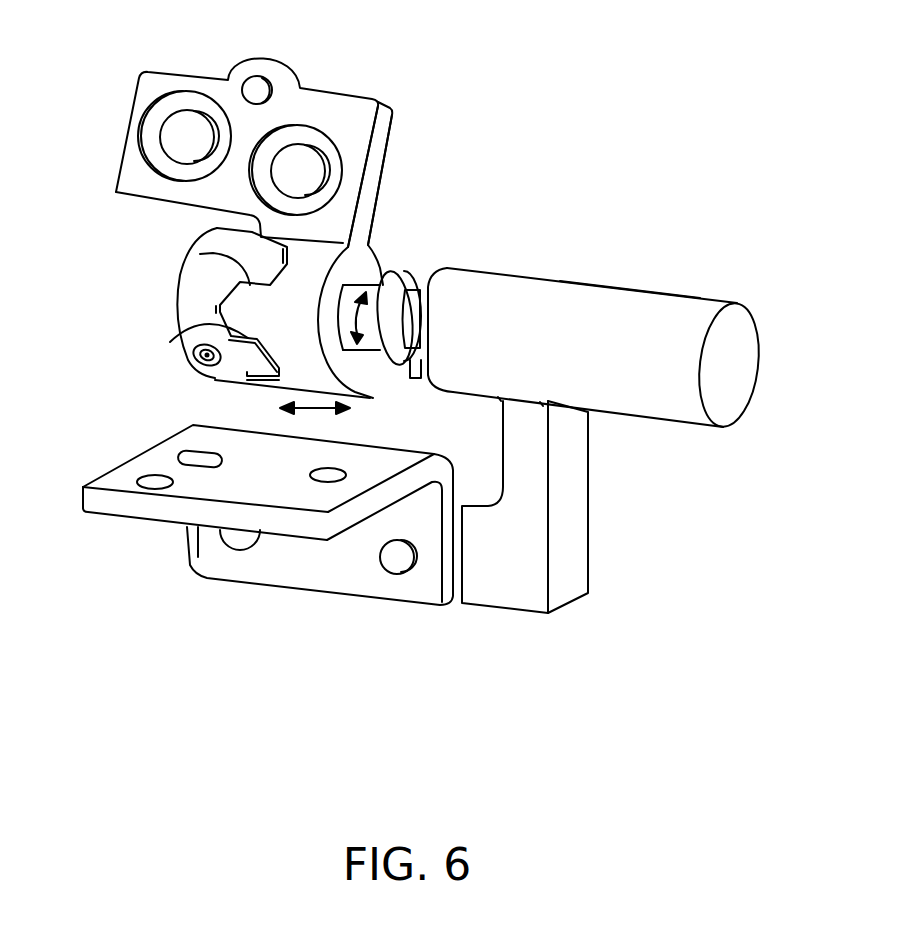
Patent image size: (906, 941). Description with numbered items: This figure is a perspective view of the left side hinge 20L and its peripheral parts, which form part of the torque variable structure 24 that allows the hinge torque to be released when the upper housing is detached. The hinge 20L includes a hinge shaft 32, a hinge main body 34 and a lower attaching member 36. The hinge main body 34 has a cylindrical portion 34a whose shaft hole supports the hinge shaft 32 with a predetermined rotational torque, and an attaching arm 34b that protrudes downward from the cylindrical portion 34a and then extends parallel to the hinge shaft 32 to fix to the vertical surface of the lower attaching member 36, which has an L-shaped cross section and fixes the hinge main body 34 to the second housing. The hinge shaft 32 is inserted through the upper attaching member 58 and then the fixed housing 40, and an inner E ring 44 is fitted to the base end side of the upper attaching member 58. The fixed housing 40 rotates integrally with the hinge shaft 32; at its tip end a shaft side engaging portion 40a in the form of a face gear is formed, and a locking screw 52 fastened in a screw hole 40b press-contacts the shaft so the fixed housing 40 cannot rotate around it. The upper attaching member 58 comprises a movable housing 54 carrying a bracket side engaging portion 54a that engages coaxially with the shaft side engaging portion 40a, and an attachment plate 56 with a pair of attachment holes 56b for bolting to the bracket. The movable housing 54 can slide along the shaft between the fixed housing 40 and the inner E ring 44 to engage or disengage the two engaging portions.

The left side hinge 20L is at (712, 188).
The torque variable structure 24 is at (472, 84).
The hinge shaft 32 is at (381, 297).
The hinge main body 34 is at (650, 410).
The cylindrical portion 34a is at (620, 306).
The attaching arm 34b is at (512, 598).
The lower attaching member 36 is at (330, 574).
The fixed housing 40 is at (178, 303).
The shaft side engaging portion 40a is at (170, 342).
The screw hole 40b is at (197, 372).
The inner E ring 44 is at (428, 280).
The locking screw 52 is at (209, 366).
The movable housing 54 is at (303, 337).
The bracket side engaging portion 54a is at (200, 254).
The attachment plate 56 is at (150, 89).
The attachment holes 56b is at (287, 170).
The upper attaching member 58 is at (313, 262).